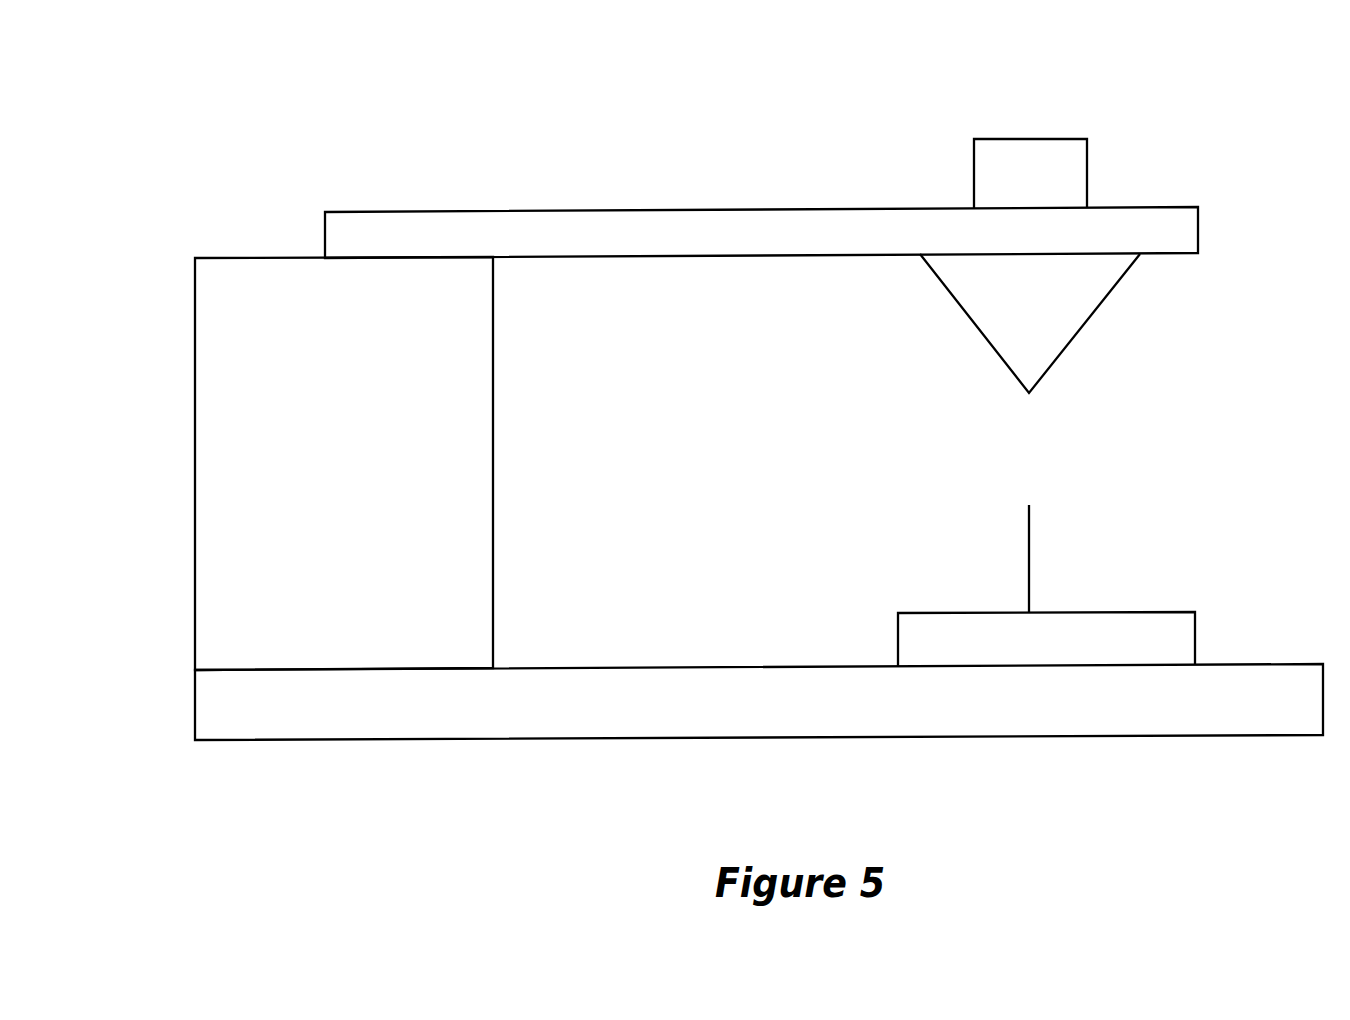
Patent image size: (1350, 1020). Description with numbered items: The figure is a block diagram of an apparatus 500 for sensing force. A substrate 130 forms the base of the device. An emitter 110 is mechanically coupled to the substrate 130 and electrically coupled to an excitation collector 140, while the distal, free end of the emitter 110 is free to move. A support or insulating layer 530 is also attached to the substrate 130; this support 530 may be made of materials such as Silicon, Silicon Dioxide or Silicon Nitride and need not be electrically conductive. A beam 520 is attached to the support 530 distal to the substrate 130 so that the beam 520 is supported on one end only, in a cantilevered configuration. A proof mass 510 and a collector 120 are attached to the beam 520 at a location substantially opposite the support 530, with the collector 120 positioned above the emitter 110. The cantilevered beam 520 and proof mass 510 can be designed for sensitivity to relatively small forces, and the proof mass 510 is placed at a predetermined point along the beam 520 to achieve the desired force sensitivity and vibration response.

The apparatus 500 is at (166, 154).
The proof mass 510 is at (1030, 173).
The beam 520 is at (761, 232).
The support or insulating layer 530 is at (344, 463).
The collector 120 is at (1030, 323).
The emitter 110 is at (1015, 560).
The excitation collector 140 is at (1046, 639).
The substrate 130 is at (759, 702).